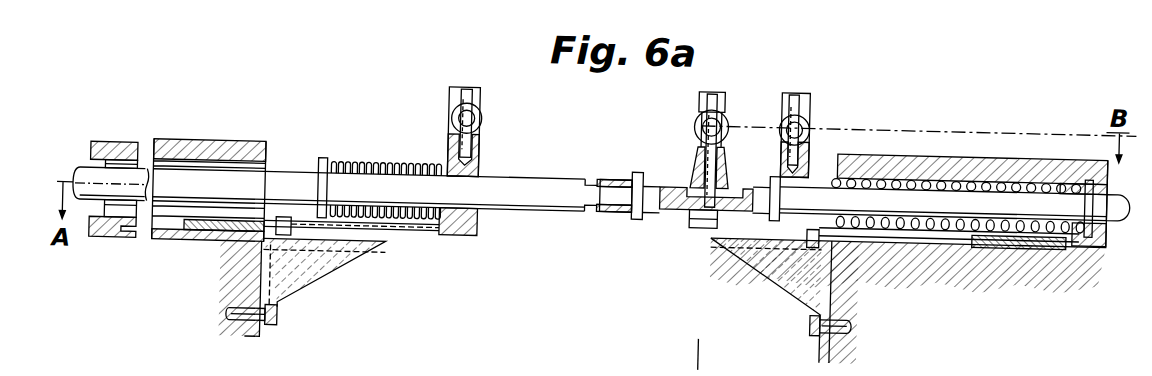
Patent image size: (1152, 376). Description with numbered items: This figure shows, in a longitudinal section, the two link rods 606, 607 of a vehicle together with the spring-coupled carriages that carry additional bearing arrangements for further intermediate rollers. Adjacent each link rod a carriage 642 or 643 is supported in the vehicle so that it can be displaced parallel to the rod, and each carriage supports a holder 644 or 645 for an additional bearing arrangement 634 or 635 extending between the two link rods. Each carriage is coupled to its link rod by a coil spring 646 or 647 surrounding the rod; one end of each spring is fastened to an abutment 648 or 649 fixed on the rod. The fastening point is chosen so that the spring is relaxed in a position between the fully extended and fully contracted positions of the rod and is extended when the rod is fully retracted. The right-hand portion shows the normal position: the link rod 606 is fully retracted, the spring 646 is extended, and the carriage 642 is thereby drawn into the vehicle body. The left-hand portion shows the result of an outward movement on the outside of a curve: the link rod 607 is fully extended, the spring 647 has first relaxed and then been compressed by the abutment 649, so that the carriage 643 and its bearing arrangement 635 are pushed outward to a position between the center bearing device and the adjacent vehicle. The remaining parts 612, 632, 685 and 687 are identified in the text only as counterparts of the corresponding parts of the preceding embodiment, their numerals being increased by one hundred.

The link rod 606 is at (1040, 192).
The link rod 607 is at (567, 199).
The coupling arm 612 is at (690, 197).
The tapered boss 632 is at (694, 102).
The additional bearing arrangement 634 is at (781, 104).
The additional bearing arrangement 635 is at (450, 108).
The carriage 642 is at (996, 228).
The carriage 643 is at (466, 228).
The holder 644 is at (779, 145).
The holder 645 is at (479, 145).
The spring 646 is at (924, 214).
The spring 647 is at (410, 207).
The abutment 648 is at (1088, 160).
The abutment 649 is at (320, 152).
The eye ring 685 is at (693, 117).
The eye bolt 687 is at (481, 106).